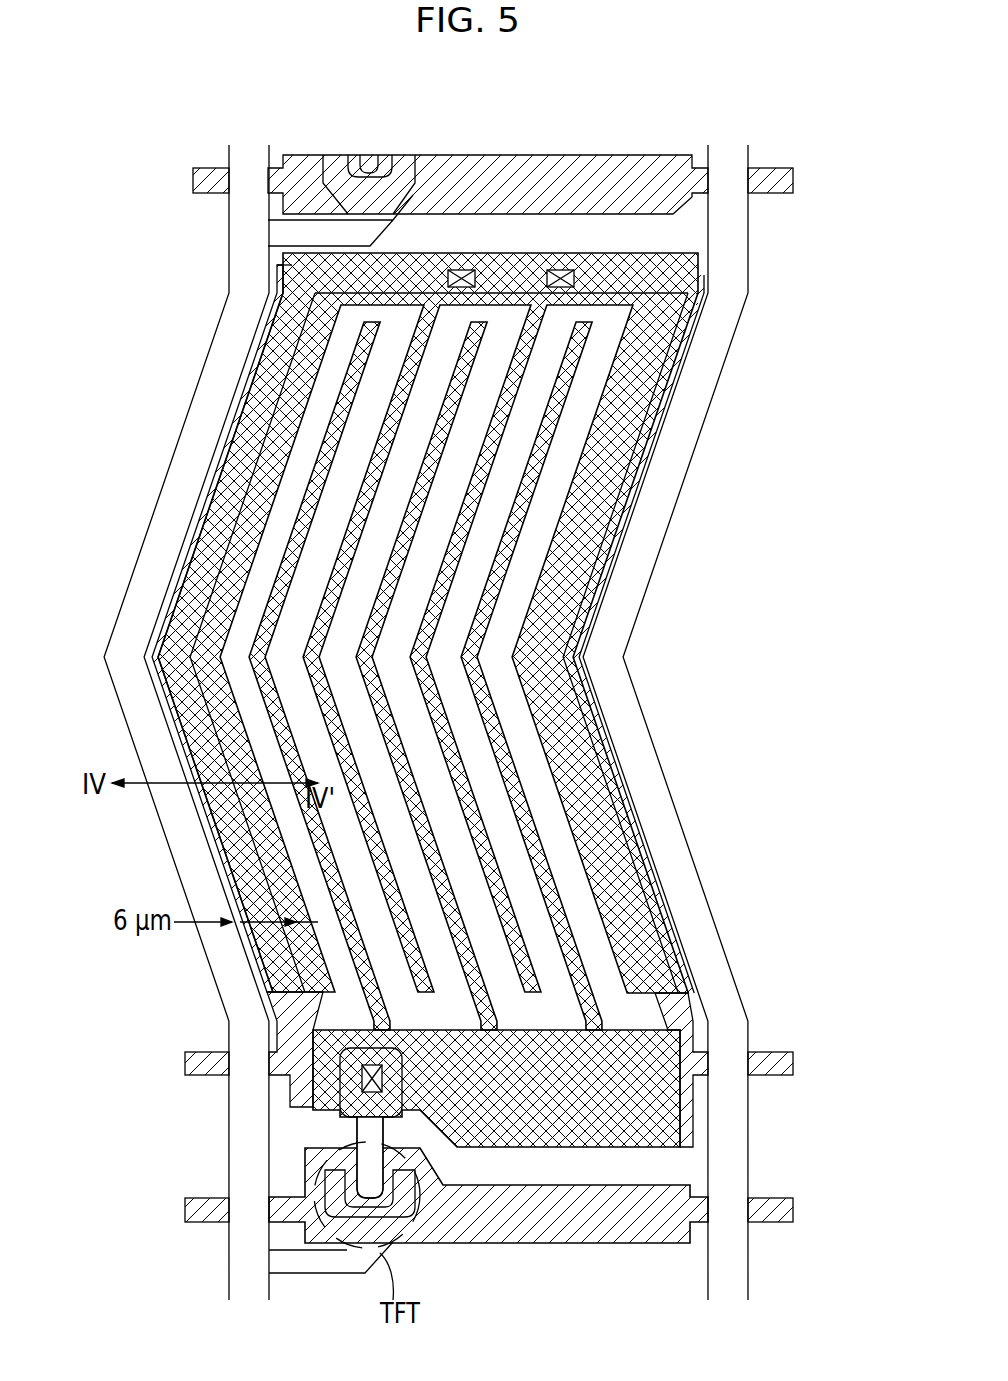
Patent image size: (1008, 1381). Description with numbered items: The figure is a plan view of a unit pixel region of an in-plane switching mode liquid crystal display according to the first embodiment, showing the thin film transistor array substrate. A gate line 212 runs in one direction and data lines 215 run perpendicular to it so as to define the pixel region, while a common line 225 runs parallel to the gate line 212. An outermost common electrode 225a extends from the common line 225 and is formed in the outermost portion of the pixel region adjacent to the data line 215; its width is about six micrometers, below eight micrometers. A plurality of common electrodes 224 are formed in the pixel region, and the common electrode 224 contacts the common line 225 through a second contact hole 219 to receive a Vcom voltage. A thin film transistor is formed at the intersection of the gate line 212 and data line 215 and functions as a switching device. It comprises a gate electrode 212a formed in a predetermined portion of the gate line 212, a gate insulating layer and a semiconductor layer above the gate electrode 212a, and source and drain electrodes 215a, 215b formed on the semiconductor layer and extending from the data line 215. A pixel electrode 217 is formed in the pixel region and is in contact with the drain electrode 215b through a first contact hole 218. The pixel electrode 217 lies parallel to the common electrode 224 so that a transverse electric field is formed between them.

The gate line 212 is at (793, 1209).
The gate electrode 212a is at (360, 1140).
The data line 215 is at (203, 845).
The source electrode 215a is at (418, 1192).
The drain electrode 215b is at (365, 1130).
The pixel electrode 217 is at (270, 597).
The first contact hole 218 is at (362, 1078).
The second contact hole 219 is at (457, 268).
The common electrode 224 is at (245, 502).
The common line 225 is at (793, 1064).
The outermost common electrode 225a is at (252, 385).